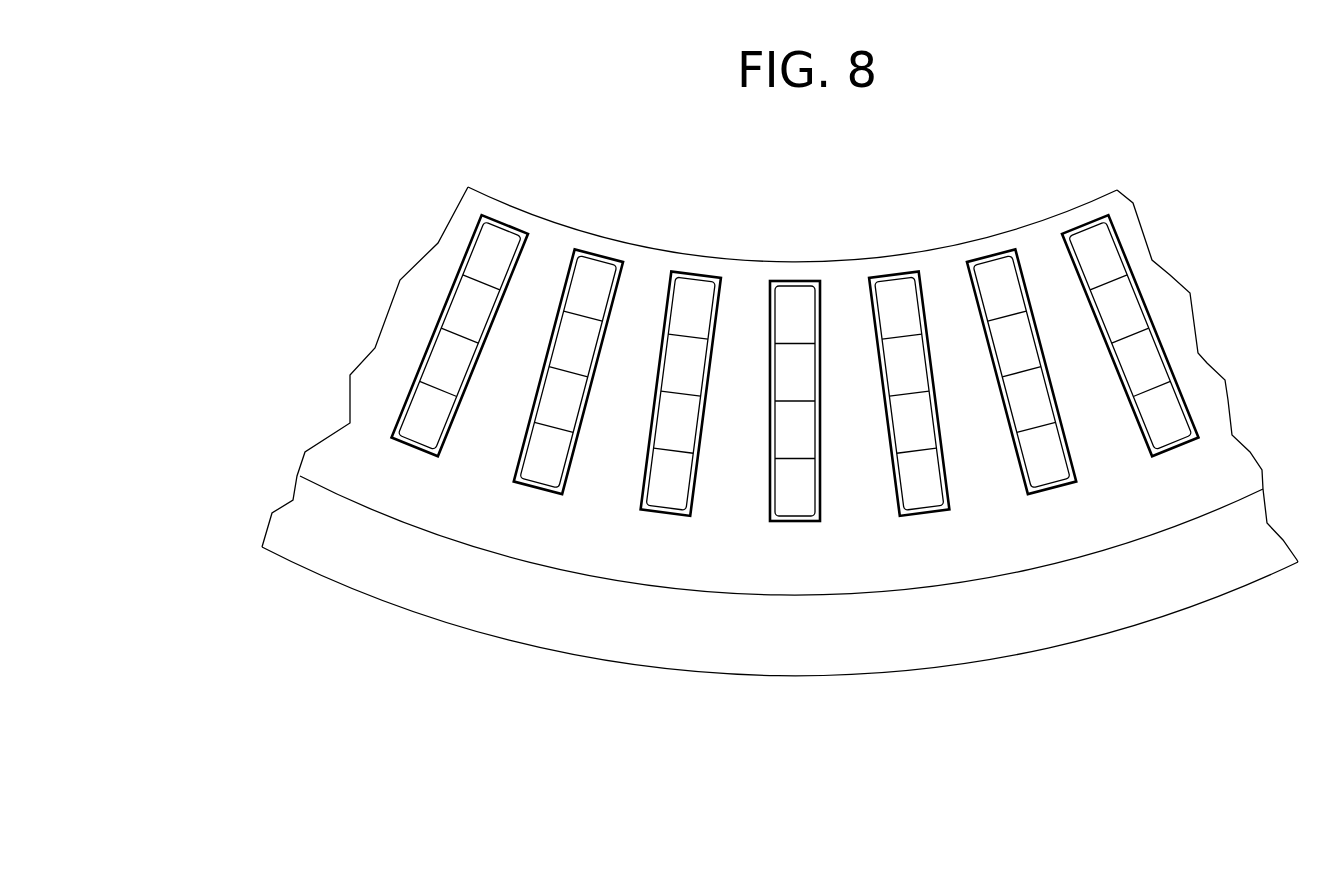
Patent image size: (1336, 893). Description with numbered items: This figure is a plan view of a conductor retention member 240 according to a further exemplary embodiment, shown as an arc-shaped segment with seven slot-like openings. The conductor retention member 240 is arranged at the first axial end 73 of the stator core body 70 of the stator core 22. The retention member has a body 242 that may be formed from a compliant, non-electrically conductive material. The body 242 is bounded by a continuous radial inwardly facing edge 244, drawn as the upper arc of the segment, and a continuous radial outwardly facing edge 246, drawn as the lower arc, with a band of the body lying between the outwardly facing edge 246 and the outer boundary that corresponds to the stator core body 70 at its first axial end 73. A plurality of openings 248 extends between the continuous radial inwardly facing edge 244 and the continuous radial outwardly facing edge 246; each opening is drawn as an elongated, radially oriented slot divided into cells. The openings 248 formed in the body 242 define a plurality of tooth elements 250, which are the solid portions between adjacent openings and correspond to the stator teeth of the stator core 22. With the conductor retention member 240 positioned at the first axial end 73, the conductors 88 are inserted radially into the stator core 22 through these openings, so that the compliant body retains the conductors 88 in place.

The stator core 22 is at (730, 459).
The stator core body 70 is at (763, 602).
The first axial end 73 is at (335, 558).
The conductors 88 is at (1163, 403).
The conductor retention member 240 is at (736, 454).
The body 242 is at (435, 262).
The continuous radial inwardly facing edge 244 is at (622, 243).
The continuous radial outwardly facing edge 246 is at (640, 583).
The openings 248 is at (690, 430).
The tooth elements 250 is at (728, 468).